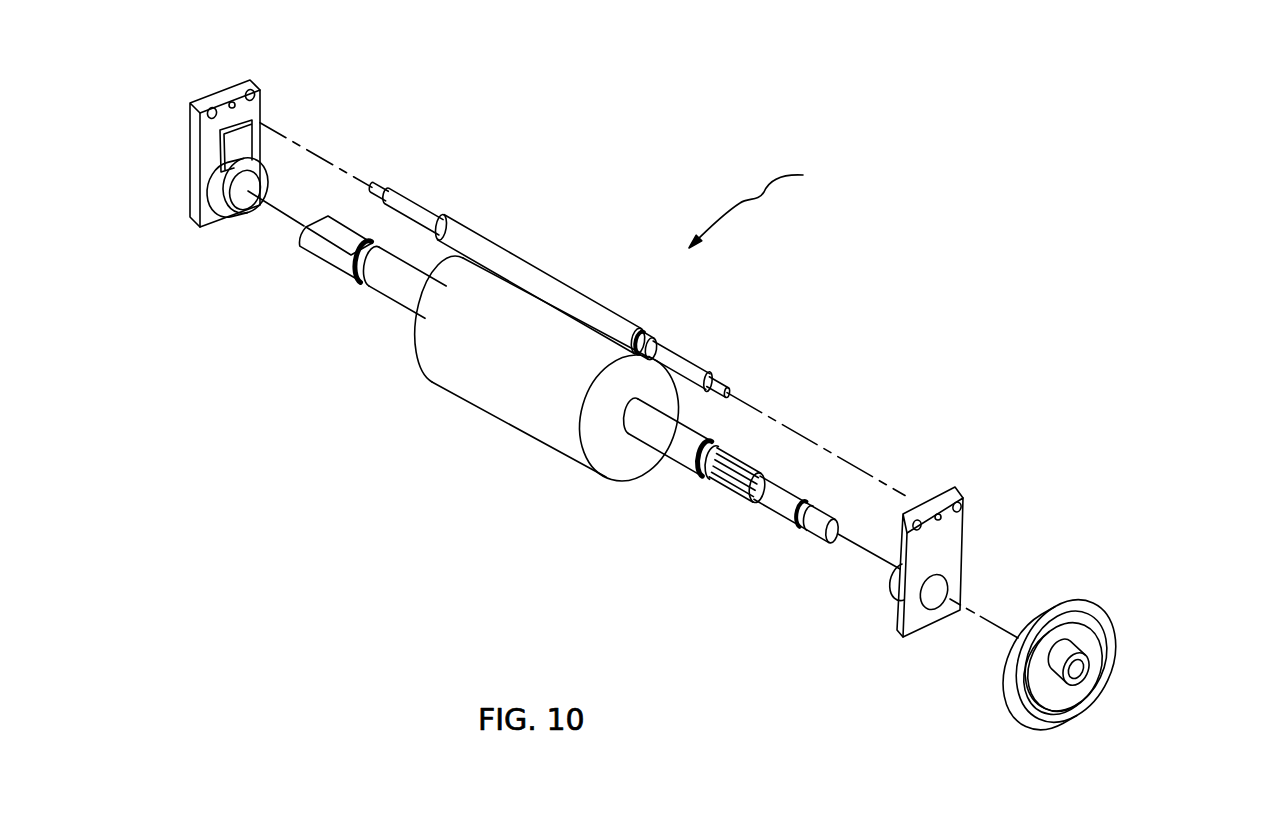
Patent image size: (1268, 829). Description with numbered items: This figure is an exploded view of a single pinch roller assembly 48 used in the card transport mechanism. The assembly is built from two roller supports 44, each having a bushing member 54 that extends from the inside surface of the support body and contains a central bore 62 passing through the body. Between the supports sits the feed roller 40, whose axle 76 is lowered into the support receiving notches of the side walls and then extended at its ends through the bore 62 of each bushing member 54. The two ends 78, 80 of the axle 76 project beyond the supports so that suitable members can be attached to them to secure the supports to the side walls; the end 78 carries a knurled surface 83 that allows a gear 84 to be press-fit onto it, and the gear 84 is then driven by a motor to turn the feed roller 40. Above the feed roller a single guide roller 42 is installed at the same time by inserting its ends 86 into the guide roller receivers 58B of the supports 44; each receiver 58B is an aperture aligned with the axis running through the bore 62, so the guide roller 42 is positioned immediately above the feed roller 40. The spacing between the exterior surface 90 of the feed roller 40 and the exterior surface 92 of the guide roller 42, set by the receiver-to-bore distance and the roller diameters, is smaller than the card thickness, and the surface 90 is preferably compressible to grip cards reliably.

The feed roller 40 is at (517, 410).
The guide roller 42 is at (563, 290).
The roller support 44 is at (197, 150).
The single pinch roller assembly 48 is at (763, 203).
The bushing member 54 is at (893, 592).
The guide roller receiver 58B is at (233, 97).
The central bore 62 is at (930, 608).
The axle 76 is at (684, 455).
The end of axle 78 is at (775, 508).
The end of axle 80 is at (378, 282).
The knurled surface 83 is at (728, 491).
The gear 84 is at (1115, 641).
The ends of guide roller 86 is at (382, 187).
The exterior surface of feed roller 90 is at (452, 368).
The exterior surface of guide roller 92 is at (493, 247).